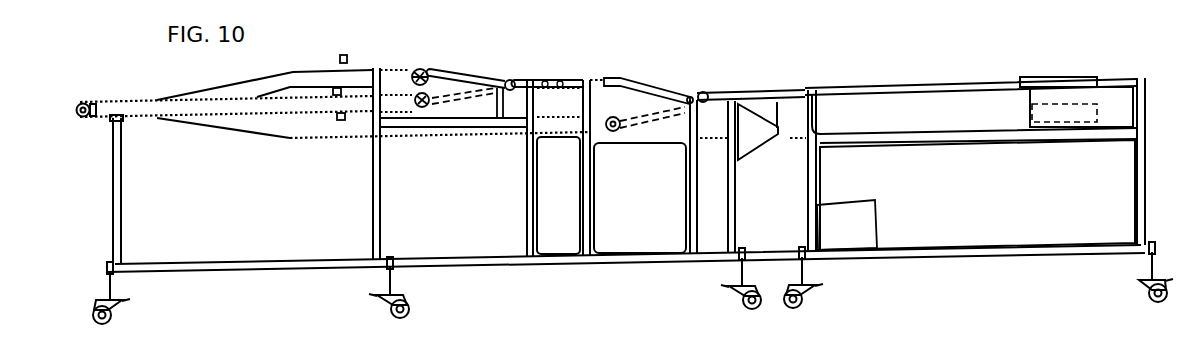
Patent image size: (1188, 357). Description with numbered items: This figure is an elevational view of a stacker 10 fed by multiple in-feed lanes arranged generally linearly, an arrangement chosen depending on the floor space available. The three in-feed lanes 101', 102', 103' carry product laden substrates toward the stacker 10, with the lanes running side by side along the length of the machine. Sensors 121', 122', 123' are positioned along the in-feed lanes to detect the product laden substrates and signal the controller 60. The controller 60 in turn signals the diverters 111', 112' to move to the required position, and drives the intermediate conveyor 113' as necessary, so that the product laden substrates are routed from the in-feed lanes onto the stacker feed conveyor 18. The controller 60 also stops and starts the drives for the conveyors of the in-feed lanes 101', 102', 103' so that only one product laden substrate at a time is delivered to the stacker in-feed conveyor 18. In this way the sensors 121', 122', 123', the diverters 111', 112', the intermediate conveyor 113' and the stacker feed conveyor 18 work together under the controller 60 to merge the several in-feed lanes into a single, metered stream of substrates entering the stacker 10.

The stacker 10 is at (1016, 43).
The stacker feed conveyor 18 is at (763, 93).
The controller 60 is at (855, 236).
The in-feed lane 101' is at (255, 82).
The in-feed lane 102' is at (226, 143).
The in-feed lane 103' is at (223, 150).
The diverter 111' is at (658, 91).
The diverter 112' is at (467, 77).
The intermediate conveyor 113' is at (564, 67).
The sensor 121' is at (368, 43).
The sensor 122' is at (394, 61).
The sensor 123' is at (341, 158).